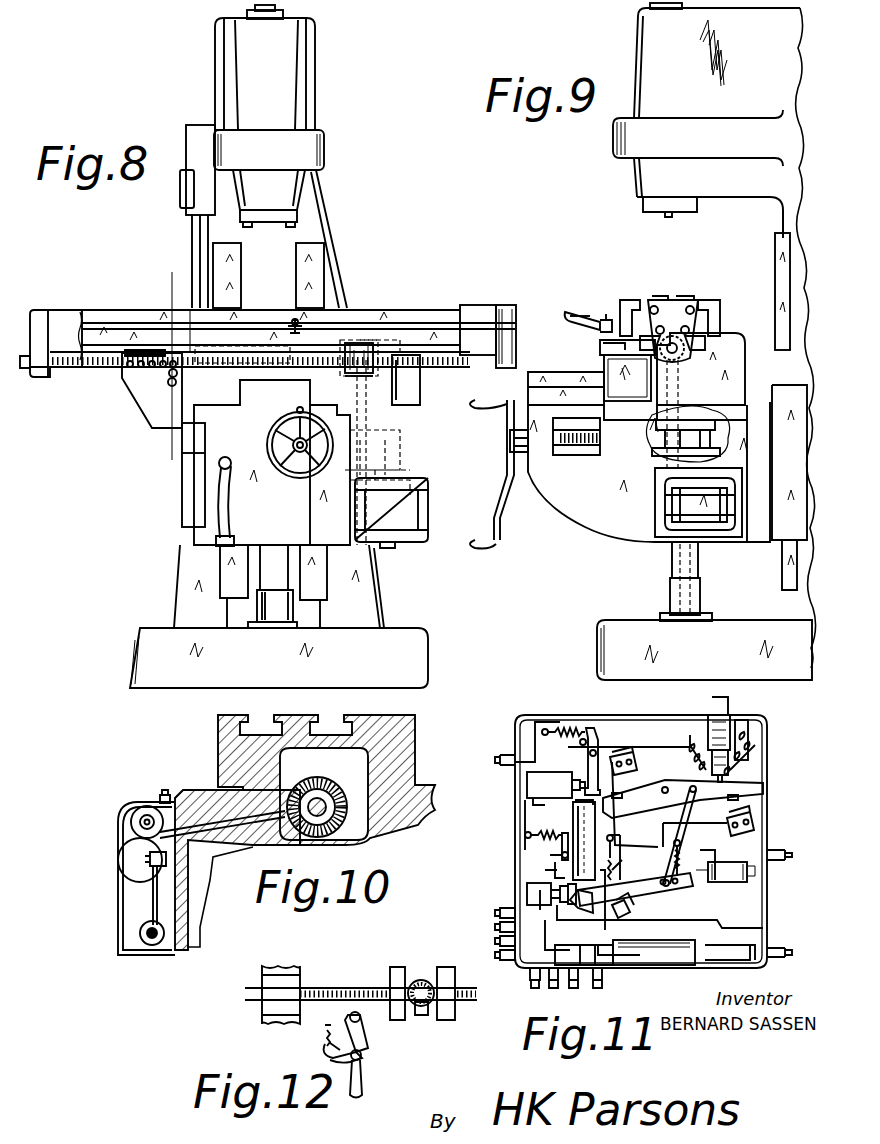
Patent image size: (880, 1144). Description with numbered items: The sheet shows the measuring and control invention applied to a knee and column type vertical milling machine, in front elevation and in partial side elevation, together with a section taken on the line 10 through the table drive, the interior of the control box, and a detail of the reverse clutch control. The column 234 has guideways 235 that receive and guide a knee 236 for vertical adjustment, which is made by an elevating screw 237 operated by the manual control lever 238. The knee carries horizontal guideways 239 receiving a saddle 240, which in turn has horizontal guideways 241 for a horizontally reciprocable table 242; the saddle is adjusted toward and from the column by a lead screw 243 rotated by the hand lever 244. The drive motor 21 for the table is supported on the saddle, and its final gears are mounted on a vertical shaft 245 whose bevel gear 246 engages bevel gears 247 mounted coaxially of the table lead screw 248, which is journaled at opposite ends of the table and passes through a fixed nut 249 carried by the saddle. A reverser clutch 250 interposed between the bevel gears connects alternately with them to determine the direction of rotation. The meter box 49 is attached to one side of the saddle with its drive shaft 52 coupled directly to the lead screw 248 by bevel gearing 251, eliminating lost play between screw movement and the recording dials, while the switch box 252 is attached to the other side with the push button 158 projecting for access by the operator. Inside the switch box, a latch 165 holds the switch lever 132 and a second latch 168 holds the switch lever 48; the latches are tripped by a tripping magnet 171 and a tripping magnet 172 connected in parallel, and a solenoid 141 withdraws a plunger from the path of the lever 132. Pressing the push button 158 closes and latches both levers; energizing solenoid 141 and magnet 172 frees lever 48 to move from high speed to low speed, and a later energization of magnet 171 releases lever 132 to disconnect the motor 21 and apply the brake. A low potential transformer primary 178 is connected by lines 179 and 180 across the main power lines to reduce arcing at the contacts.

In FIG. 8, the section line 10 is at (165, 286).
In FIG. 8, the drive motor 21 is at (414, 520).
In FIG. 11, the switch lever 48 is at (646, 890).
In FIG. 8, the meter box 49 is at (148, 405).
In FIG. 10, the drive shaft 52 is at (212, 792).
In FIG. 11, the starting switch lever 132 is at (756, 798).
In FIG. 11, the solenoid 141 is at (722, 882).
In FIG. 9, the push button 158 is at (600, 348).
In FIG. 11, the push button 158 is at (729, 714).
In FIG. 11, the latch 165 is at (597, 752).
In FIG. 11, the second latch 168 is at (560, 840).
In FIG. 11, the tripping magnet 171 is at (528, 786).
In FIG. 11, the tripping magnet 172 is at (530, 893).
In FIG. 11, the transformer primary 178 is at (670, 965).
In FIG. 11, the line 179 is at (730, 960).
In FIG. 11, the line 180 is at (608, 965).
In FIG. 9, the column 234 is at (796, 213).
In FIG. 9, the guideways 235 is at (780, 265).
In FIG. 9, the knee 236 is at (770, 385).
In FIG. 9, the elevating screw 237 is at (683, 596).
In FIG. 8, the manual control lever 238 is at (214, 503).
In FIG. 9, the horizontal guideways 239 is at (560, 378).
In FIG. 9, the saddle 240 is at (724, 340).
In FIG. 9, the horizontal guideways 241 is at (612, 322).
In FIG. 8, the table 242 is at (425, 310).
In FIG. 9, the table 242 is at (636, 300).
In FIG. 9, the lead screw 243 is at (575, 455).
In FIG. 9, the hand lever 244 is at (506, 418).
In FIG. 8, the vertical shaft 245 is at (362, 394).
In FIG. 8, the bevel gear 246 is at (350, 372).
In FIG. 8, the bevel gears 247 is at (348, 340).
In FIG. 8, the table lead screw 248 is at (100, 368).
In FIG. 10, the table lead screw 248 is at (362, 838).
In FIG. 8, the fixed nut 249 is at (188, 312).
In FIG. 8, the reverser clutch 250 is at (364, 343).
In FIG. 12, the reverser clutch 250 is at (423, 980).
In FIG. 8, the bevel gearing 251 is at (295, 320).
In FIG. 9, the bevel gearing 251 is at (572, 318).
In FIG. 10, the bevel gearing 251 is at (292, 815).
In FIG. 12, the bevel gearing 251 is at (364, 1085).
In FIG. 12, the switch box 252 is at (368, 1028).
In FIG. 11, the switch box 252 is at (767, 752).